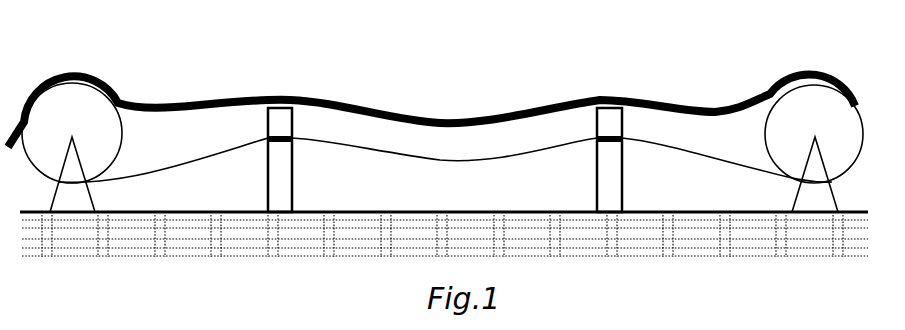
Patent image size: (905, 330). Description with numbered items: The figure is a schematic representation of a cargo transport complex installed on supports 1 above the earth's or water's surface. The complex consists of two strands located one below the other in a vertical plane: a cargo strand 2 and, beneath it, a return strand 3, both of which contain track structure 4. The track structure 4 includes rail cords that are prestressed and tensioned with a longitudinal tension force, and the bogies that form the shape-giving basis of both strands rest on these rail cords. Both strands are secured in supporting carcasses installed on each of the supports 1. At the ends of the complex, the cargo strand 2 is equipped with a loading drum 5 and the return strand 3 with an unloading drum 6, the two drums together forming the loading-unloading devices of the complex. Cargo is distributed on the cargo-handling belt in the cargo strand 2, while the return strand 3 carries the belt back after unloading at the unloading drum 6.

The support 1 is at (280, 120).
The cargo strand 2 is at (150, 110).
The return strand 3 is at (158, 172).
The track structure 4 is at (683, 108).
The loading drum 5 is at (767, 117).
The unloading drum 6 is at (115, 100).